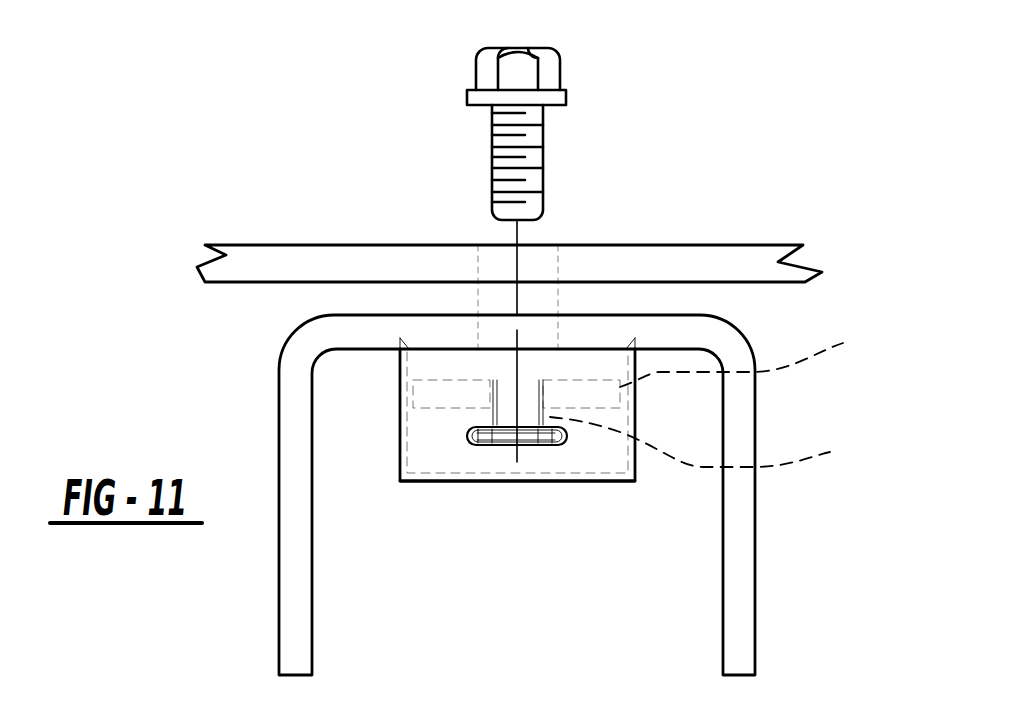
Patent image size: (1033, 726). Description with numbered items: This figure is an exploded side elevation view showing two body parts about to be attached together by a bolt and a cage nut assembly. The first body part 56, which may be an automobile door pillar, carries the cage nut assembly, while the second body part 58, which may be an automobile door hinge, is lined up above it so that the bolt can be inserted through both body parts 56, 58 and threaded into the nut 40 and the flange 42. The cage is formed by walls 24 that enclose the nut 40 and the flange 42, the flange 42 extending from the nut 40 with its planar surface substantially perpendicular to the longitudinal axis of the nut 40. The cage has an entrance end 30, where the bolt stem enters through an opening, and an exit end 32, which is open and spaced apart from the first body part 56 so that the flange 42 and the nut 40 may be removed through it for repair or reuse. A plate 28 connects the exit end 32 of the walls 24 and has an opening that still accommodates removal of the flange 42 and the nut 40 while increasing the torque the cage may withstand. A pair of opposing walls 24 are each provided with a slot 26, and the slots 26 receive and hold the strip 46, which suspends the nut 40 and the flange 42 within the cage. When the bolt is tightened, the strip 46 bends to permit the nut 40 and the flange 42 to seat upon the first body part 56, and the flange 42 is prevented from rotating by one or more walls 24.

The walls 24 is at (400, 408).
The slots 26 is at (555, 447).
The plate 28 is at (411, 476).
The entrance end 30 is at (462, 365).
The exit end 32 is at (475, 455).
The nut 40 is at (702, 445).
The flange 42 is at (745, 358).
The strip 46 is at (528, 440).
The first body part 56 is at (755, 583).
The second body part 58 is at (278, 245).